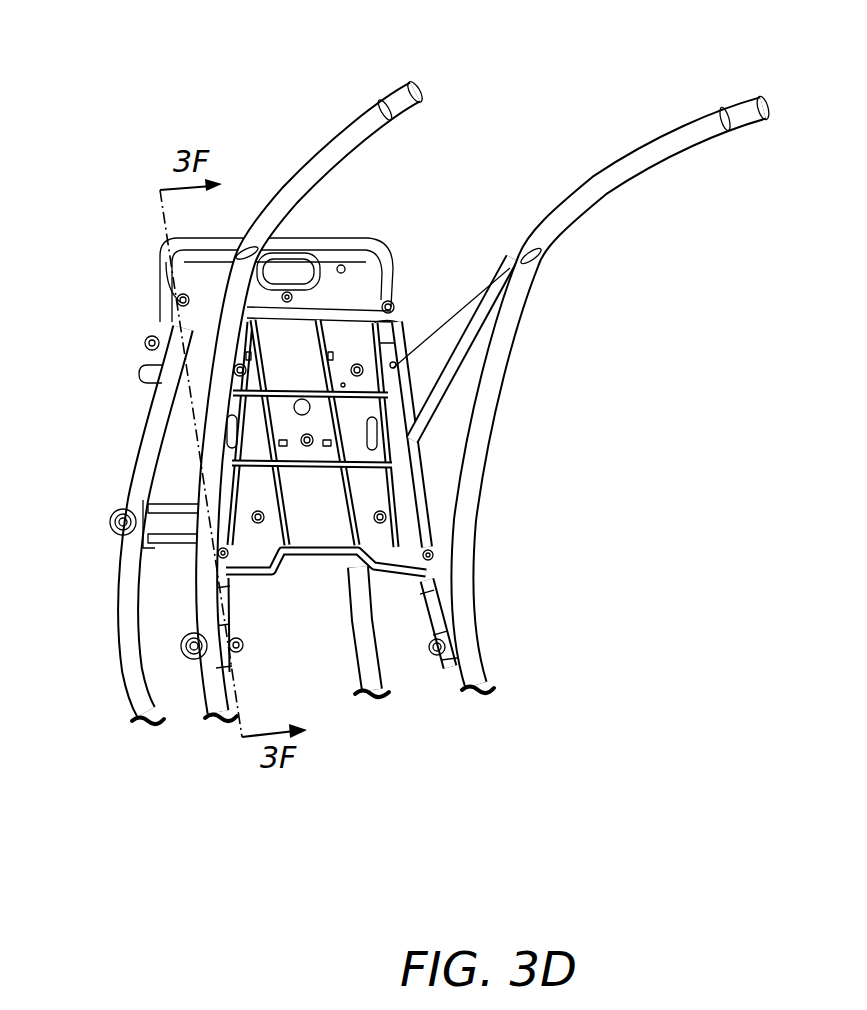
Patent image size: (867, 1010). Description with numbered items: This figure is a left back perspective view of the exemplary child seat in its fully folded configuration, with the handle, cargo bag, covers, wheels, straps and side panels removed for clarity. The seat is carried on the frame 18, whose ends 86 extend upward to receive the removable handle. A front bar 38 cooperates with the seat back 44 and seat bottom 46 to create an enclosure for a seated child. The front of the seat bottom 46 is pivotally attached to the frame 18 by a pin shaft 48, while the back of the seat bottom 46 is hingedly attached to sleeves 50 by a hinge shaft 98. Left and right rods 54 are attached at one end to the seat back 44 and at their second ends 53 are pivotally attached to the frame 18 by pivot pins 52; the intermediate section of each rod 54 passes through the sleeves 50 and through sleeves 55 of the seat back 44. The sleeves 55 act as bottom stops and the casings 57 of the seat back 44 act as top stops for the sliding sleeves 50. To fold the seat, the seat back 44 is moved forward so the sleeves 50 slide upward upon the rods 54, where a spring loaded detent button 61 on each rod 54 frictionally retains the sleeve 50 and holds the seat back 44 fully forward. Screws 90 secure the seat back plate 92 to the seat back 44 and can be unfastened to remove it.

The frame 18 is at (640, 178).
The ends of frame 86 is at (408, 84).
The screws 90 is at (183, 296).
The seat back plate 92 is at (367, 284).
The casings 57 is at (165, 282).
The sleeves 50 is at (165, 320).
The hinge shaft 98 is at (145, 343).
The front bar 38 is at (139, 376).
The rods 54 is at (188, 410).
The seat bottom 46 is at (165, 453).
The seat back 44 is at (385, 450).
The pin shaft 48 is at (178, 523).
The sleeves of seat back 55 is at (222, 556).
The pivot pins 52 is at (240, 646).
The second ends of rods 53 is at (224, 668).
The detent button 61 is at (393, 365).